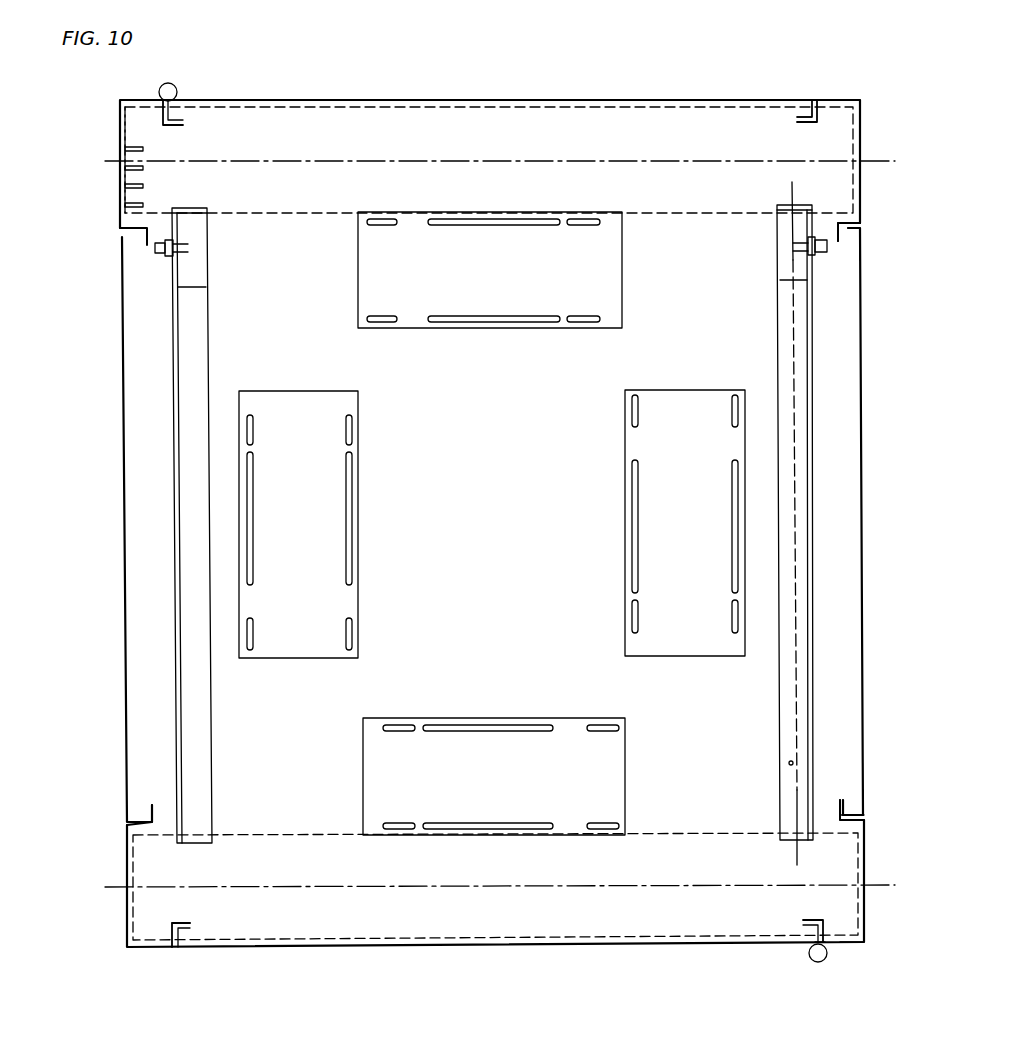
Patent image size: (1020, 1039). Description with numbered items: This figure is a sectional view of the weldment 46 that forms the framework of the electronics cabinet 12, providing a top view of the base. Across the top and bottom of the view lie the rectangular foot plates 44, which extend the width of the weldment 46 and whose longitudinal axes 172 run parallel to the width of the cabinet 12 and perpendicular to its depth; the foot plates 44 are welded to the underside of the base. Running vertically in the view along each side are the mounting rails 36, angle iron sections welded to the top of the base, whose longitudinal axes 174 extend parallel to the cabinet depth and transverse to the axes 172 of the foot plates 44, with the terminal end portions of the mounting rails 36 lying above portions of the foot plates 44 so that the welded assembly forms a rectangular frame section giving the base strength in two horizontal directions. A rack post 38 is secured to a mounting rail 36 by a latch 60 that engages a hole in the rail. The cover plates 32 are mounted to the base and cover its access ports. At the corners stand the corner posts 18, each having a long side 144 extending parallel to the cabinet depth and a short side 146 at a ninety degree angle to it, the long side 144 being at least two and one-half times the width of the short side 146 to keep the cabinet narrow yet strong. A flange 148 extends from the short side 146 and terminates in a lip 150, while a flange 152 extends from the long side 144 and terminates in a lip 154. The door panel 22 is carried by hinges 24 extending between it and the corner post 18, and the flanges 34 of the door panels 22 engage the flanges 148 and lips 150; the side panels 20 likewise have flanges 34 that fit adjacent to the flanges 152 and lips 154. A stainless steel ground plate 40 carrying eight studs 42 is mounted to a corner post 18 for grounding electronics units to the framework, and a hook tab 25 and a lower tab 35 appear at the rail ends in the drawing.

The electronics cabinet 12 is at (107, 488).
The corner post 18 is at (114, 196).
The side panel 20 is at (864, 675).
The door panel 22 is at (492, 513).
The hinge 24 is at (175, 88).
The hook tab 25 is at (178, 121).
The cover plate 32 is at (290, 395).
The flange 34 is at (544, 883).
The lower tab 35 is at (192, 922).
The mounting rail 36 is at (503, 523).
The rack post 38 is at (780, 292).
The ground plate 40 is at (124, 140).
The stainless steel stud 42 is at (143, 193).
The foot plate 44 is at (612, 108).
The weldment 46 is at (345, 98).
The latch 60 is at (820, 250).
The long side 144 is at (862, 146).
The short side 146 is at (845, 99).
The flange 148 is at (812, 98).
The lip 150 is at (800, 122).
The flange 152 is at (848, 216).
The lip 154 is at (805, 238).
The longitudinal axis 172 is at (527, 162).
The longitudinal axis 174 is at (795, 680).